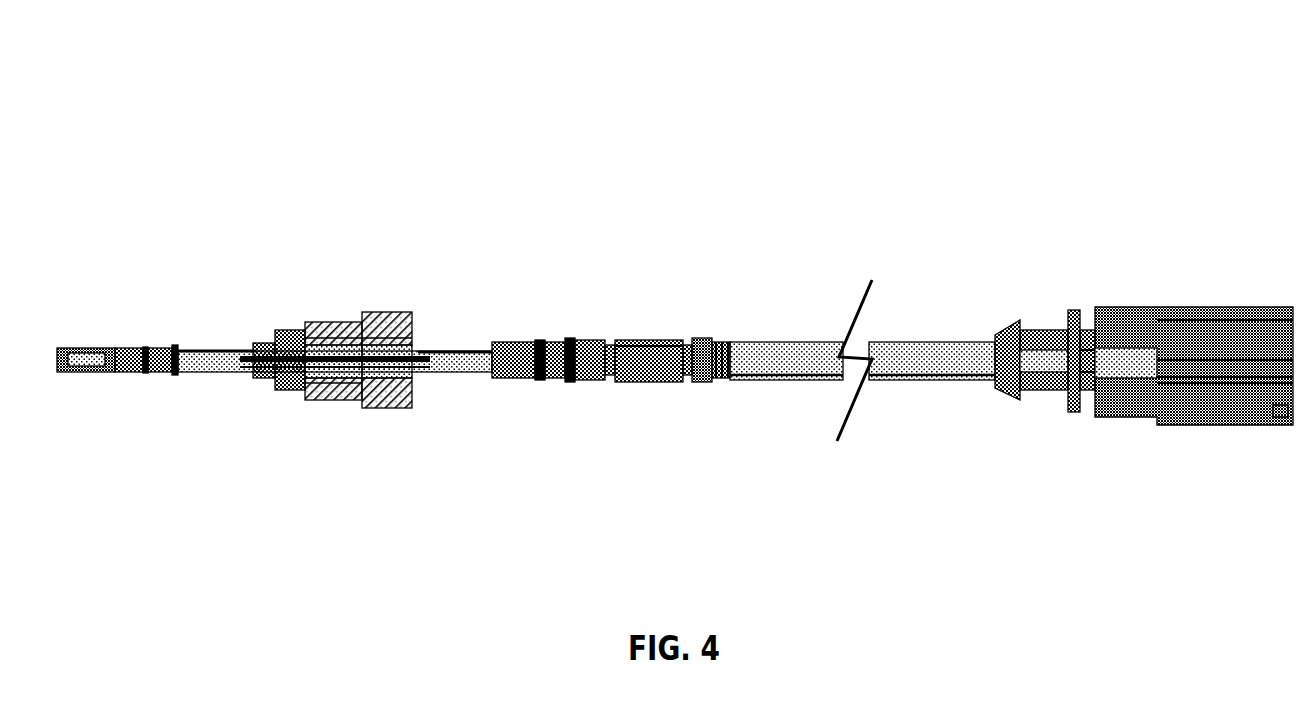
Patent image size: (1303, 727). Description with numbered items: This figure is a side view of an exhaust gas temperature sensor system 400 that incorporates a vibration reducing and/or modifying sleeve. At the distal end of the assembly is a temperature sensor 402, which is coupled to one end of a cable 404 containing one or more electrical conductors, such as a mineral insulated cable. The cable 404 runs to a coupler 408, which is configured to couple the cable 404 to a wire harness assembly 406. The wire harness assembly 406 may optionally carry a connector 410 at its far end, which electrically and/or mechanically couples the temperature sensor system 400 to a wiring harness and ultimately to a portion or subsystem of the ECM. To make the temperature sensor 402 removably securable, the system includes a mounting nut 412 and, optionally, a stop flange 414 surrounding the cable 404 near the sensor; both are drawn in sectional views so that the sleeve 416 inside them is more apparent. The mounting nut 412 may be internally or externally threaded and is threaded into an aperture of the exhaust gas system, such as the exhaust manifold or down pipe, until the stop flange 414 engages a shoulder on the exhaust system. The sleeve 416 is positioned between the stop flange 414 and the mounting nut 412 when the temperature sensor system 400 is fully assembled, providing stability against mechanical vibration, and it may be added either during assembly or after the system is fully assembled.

The temperature sensor system 400 is at (232, 116).
The temperature sensor 402 is at (97, 360).
The cable 404 is at (231, 350).
The wire harness assembly 406 is at (760, 342).
The coupler 408 is at (583, 340).
The connector 410 is at (1155, 307).
The mounting nut 412 is at (397, 393).
The stop flange 414 is at (294, 388).
The vibration reducing and/or modifying sleeve 416 is at (313, 345).